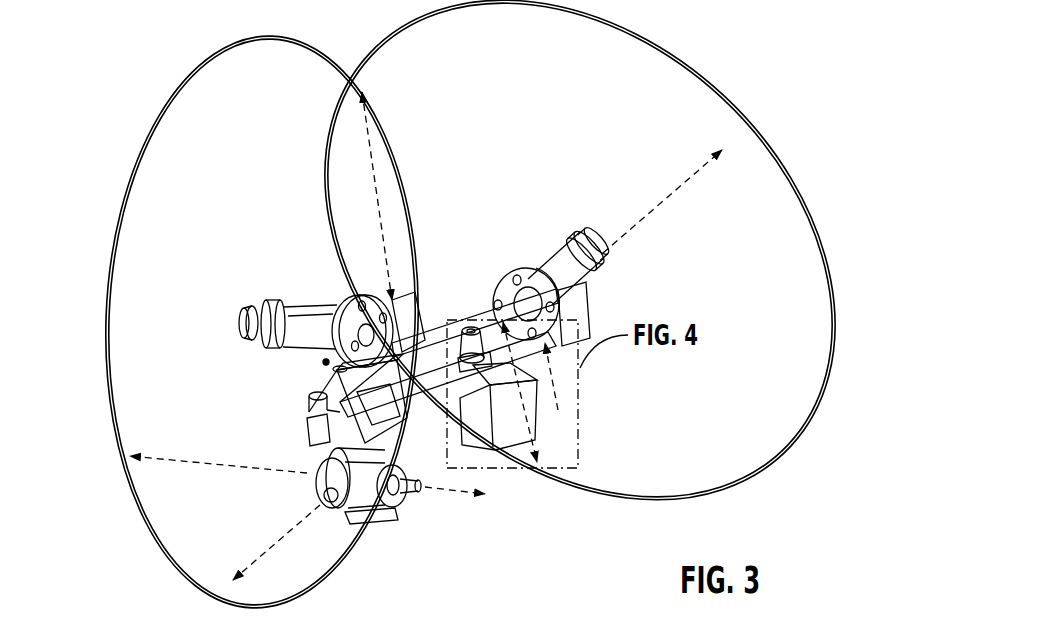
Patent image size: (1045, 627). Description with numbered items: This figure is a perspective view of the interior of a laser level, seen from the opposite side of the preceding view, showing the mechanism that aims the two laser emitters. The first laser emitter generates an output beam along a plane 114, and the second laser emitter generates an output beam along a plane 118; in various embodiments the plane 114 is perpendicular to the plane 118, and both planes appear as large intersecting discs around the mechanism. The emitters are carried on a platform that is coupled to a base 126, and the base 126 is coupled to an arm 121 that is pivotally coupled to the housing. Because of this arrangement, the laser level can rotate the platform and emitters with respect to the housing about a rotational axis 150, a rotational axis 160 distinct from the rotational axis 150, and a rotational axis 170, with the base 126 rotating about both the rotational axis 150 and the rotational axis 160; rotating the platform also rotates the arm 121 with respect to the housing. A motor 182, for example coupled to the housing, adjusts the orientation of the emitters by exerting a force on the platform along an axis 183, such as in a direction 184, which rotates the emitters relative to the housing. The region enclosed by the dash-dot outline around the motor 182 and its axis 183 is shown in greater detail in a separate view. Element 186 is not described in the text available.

The plane 114 is at (824, 217).
The plane 118 is at (127, 203).
The arm 121 is at (323, 479).
The base 126 is at (452, 307).
The rotational axis 150 is at (664, 196).
The rotational axis 160 is at (167, 479).
The rotational axis 170 is at (357, 127).
The motor 182 is at (500, 460).
The axis 183 is at (564, 444).
The direction 184 is at (567, 388).
The motor assembly 186 is at (303, 386).